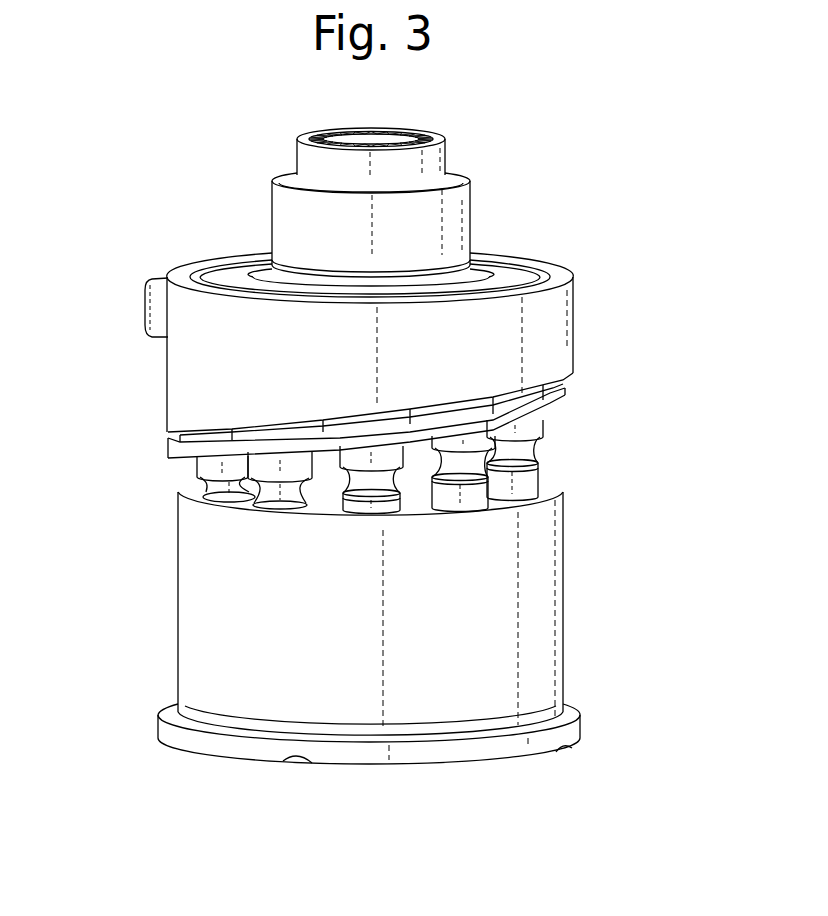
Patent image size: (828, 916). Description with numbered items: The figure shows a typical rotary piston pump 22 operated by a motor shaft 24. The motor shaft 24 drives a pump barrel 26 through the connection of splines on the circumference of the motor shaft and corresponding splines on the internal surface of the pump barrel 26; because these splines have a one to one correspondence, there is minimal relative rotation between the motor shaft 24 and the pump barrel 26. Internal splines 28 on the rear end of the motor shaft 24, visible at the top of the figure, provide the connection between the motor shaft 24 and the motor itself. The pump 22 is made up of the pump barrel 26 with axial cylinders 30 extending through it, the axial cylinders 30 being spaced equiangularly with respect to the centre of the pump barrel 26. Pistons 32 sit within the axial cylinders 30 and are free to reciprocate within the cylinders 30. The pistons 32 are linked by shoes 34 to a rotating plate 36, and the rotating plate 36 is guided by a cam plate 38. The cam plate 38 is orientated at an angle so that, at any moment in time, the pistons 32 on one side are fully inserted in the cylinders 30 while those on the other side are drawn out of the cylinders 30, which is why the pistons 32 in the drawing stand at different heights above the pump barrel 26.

The rotary piston pump 22 is at (602, 570).
The motor shaft 24 is at (452, 211).
The pump barrel 26 is at (541, 674).
The internal splines 28 is at (343, 137).
The axial cylinders 30 is at (220, 495).
The pistons 32 is at (529, 477).
The shoes 34 is at (207, 468).
The rotating plate 36 is at (183, 453).
The cam plate 38 is at (193, 375).